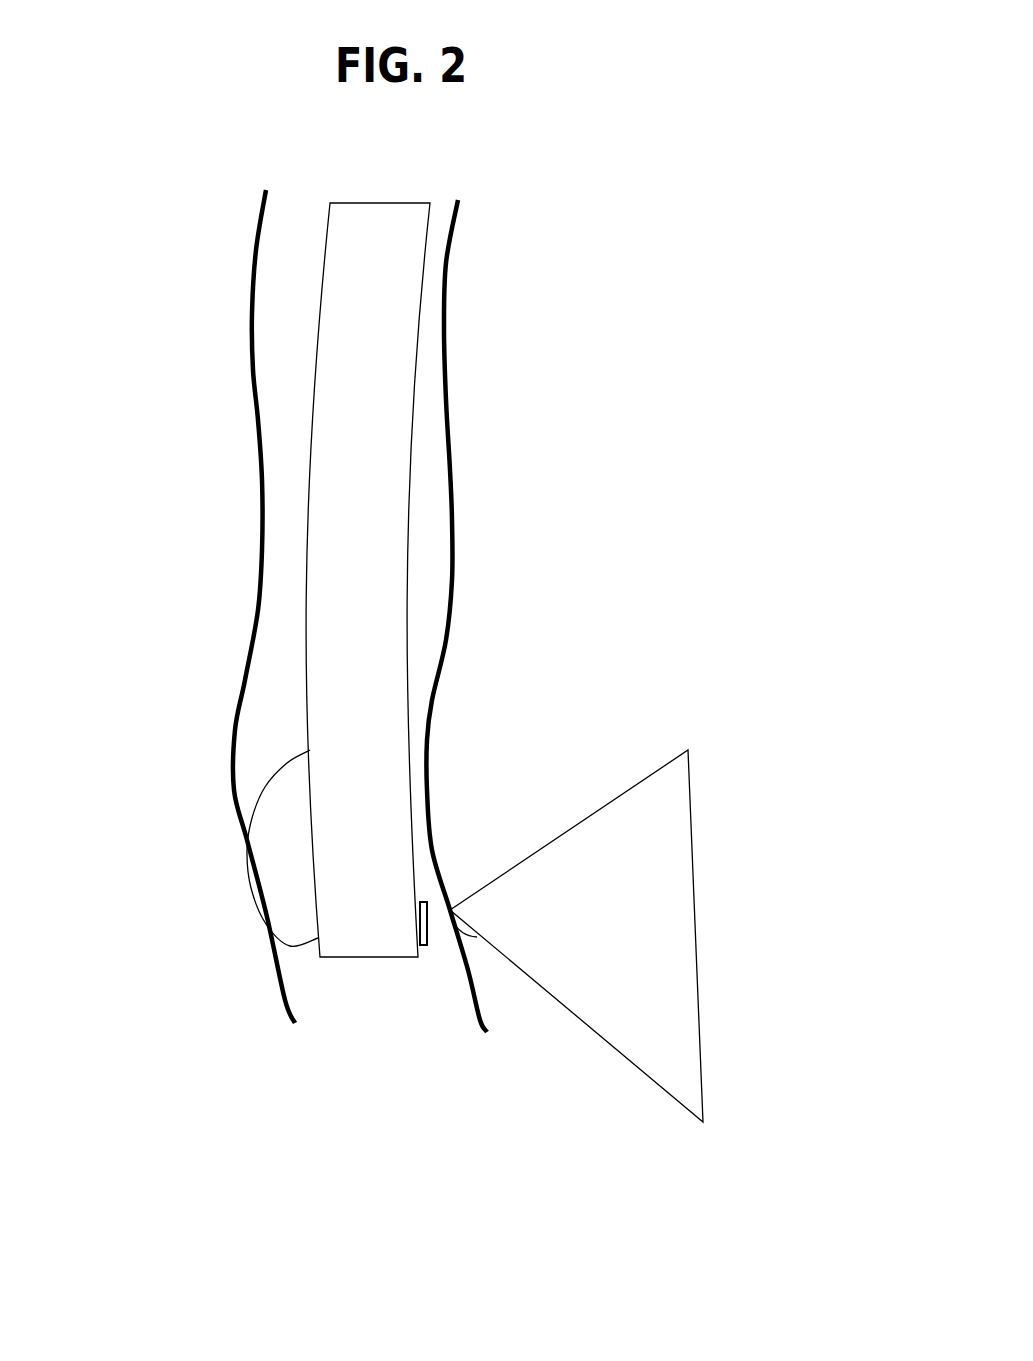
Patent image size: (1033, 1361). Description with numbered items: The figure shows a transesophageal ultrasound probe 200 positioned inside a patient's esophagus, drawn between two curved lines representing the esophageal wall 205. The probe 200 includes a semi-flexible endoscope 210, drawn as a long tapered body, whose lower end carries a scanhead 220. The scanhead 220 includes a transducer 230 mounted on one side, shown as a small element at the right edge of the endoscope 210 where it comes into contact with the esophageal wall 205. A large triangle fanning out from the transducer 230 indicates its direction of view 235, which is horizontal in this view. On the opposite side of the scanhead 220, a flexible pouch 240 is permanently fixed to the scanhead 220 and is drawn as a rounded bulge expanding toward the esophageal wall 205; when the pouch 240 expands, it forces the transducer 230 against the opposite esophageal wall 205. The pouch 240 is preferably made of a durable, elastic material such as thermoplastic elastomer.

The transesophageal ultrasound probe 200 is at (148, 100).
The esophageal wall 205 is at (455, 465).
The endoscope 210 is at (367, 303).
The scanhead 220 is at (428, 727).
The transducer 230 is at (430, 927).
The direction of view 235 is at (657, 848).
The flexible pouch 240 is at (263, 772).